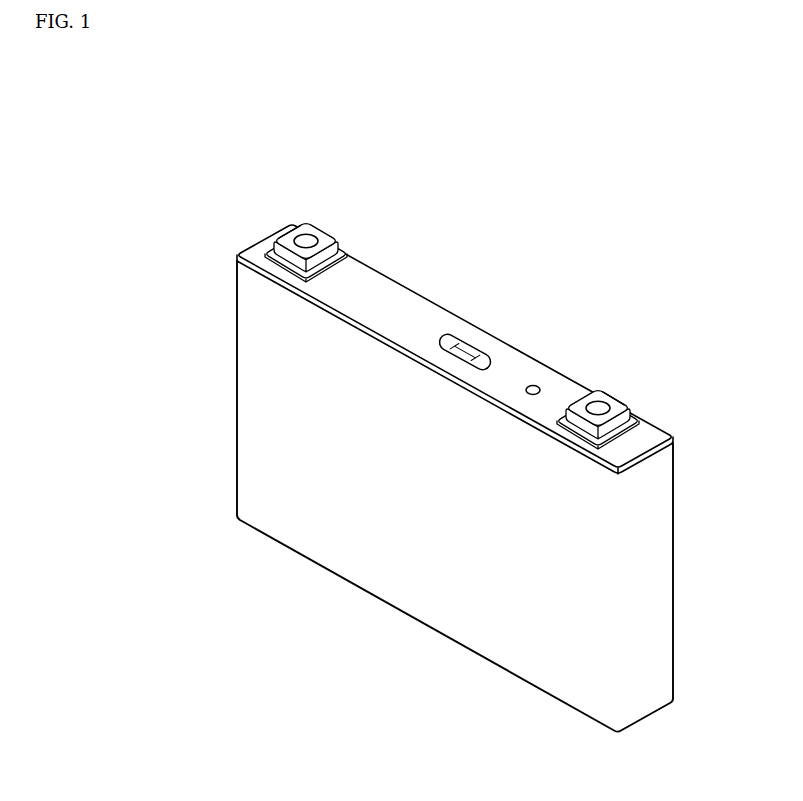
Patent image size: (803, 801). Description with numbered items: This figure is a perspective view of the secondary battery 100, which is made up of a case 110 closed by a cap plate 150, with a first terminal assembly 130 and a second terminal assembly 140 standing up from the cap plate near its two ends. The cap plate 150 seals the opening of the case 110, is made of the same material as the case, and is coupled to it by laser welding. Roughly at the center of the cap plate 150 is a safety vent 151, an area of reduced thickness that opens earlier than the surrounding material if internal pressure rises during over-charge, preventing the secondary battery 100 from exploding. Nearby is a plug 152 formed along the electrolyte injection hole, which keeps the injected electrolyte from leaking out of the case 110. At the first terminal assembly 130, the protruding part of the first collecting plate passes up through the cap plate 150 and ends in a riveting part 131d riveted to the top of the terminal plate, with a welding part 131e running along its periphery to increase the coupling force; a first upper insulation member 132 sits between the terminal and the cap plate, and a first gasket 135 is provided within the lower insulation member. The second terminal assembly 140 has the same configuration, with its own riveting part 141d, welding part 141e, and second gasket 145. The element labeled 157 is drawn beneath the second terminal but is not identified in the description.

The secondary battery 100 is at (452, 438).
The case 110 is at (410, 604).
The cap plate 150 is at (403, 292).
The safety vent 151 is at (478, 346).
The plug 152 is at (532, 385).
The first terminal assembly 130 is at (271, 213).
The riveting part 131d is at (300, 236).
The welding part 131e is at (284, 234).
The first upper insulation member 132 is at (265, 250).
The first gasket 135 is at (327, 223).
The second terminal assembly 140 is at (644, 384).
The riveting part 141d is at (608, 408).
The welding part 141e is at (605, 396).
The second gasket 145 is at (644, 403).
The second terminal plate 157 is at (645, 417).